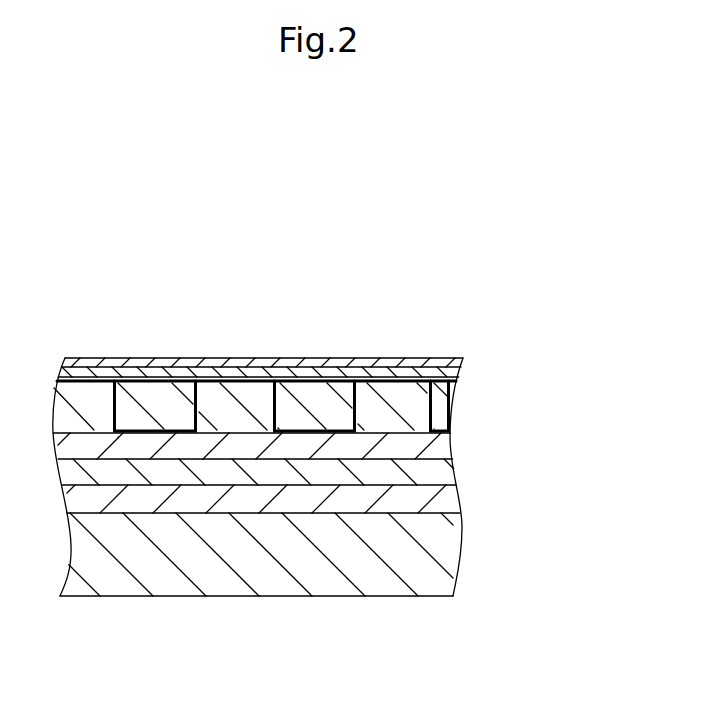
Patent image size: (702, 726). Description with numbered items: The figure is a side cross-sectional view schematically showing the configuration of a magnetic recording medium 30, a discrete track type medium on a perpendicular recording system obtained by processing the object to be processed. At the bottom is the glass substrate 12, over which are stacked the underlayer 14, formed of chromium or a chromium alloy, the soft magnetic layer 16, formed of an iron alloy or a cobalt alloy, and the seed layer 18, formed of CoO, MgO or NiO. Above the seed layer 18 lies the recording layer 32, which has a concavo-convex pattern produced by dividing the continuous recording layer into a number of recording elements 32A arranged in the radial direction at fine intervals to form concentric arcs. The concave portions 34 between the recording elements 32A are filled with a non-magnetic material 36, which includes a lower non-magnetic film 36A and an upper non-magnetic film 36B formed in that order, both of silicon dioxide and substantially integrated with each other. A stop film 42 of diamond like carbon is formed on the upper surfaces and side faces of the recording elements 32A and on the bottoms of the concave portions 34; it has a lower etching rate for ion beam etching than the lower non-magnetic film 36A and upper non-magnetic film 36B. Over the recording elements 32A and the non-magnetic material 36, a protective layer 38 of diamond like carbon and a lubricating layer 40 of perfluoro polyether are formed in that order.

The glass substrate 12 is at (467, 558).
The underlayer 14 is at (460, 502).
The soft magnetic layer 16 is at (455, 473).
The seed layer 18 is at (453, 445).
The magnetic recording medium 30 is at (240, 190).
The recording layer 32 is at (468, 408).
The recording element 32A is at (240, 392).
The concave portion 34 is at (325, 388).
The non-magnetic material 36 is at (472, 167).
The lower non-magnetic film 36A is at (305, 388).
The upper non-magnetic film 36B is at (294, 327).
The protective layer 38 is at (463, 373).
The lubricating layer 40 is at (465, 358).
The stop film 42 is at (433, 408).